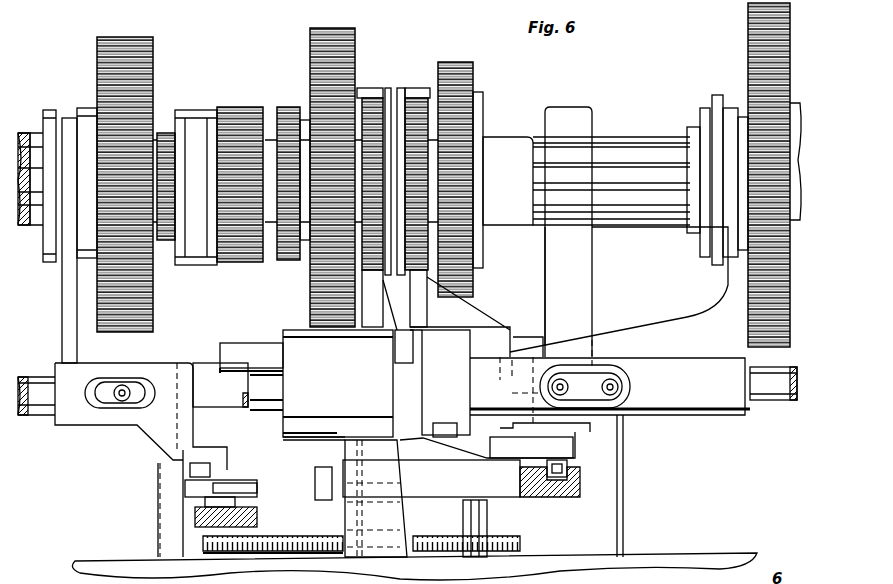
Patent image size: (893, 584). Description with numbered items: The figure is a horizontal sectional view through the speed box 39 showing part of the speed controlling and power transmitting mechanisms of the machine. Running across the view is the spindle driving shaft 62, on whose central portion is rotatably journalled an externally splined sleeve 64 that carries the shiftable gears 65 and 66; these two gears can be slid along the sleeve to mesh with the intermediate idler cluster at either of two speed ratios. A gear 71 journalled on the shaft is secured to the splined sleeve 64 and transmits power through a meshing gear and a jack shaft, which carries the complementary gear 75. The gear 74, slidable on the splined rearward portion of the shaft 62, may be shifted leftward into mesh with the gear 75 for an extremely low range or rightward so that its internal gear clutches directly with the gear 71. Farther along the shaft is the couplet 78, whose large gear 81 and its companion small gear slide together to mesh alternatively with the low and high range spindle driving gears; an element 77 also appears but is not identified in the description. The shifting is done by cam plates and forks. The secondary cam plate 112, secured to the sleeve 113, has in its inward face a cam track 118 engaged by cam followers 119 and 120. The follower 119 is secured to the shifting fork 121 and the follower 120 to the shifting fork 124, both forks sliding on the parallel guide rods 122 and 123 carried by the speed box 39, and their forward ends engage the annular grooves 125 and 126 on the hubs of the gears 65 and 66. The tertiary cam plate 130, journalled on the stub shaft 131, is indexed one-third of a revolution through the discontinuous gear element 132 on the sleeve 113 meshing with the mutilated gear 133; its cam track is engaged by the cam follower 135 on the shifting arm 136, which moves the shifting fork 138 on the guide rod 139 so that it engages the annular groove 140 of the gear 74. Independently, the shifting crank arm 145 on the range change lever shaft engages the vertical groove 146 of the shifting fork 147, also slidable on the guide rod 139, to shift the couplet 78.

The gear 74 is at (97, 53).
The annular groove 140 is at (63, 118).
The complementary gear 75 is at (158, 130).
The gear 71 is at (240, 107).
The splined sleeve 64 is at (290, 107).
The shiftable gear 66 is at (310, 60).
The shaft 77 is at (217, 186).
The annular groove 126 is at (372, 98).
The annular groove 125 is at (415, 98).
The shiftable gear 65 is at (462, 62).
The large gear 81 is at (748, 22).
The couplet 78 is at (721, 75).
The shaft 62 is at (610, 157).
The speed box 39 is at (590, 277).
The shifting fork 121 is at (475, 315).
The guide rod 123 is at (237, 350).
The guide rod 139 is at (205, 383).
The guide rod 122 is at (293, 410).
The shifting crank arm 145 is at (383, 440).
The vertical groove 146 is at (443, 423).
The cam follower 119 is at (563, 458).
The shifting fork 147 is at (692, 398).
The shifting fork 138 is at (83, 430).
The shifting fork 124 is at (317, 437).
The secondary cam plate 112 is at (332, 470).
The tertiary cam plate 130 is at (267, 517).
The cam follower 120 is at (407, 475).
The shifting arm 136 is at (197, 488).
The cam follower 135 is at (197, 512).
The mutilated gear 133 is at (280, 537).
The cam track 118 is at (547, 497).
The sleeve 113 is at (457, 525).
The stub shaft 131 is at (303, 552).
The discontinuous gear element 132 is at (520, 540).